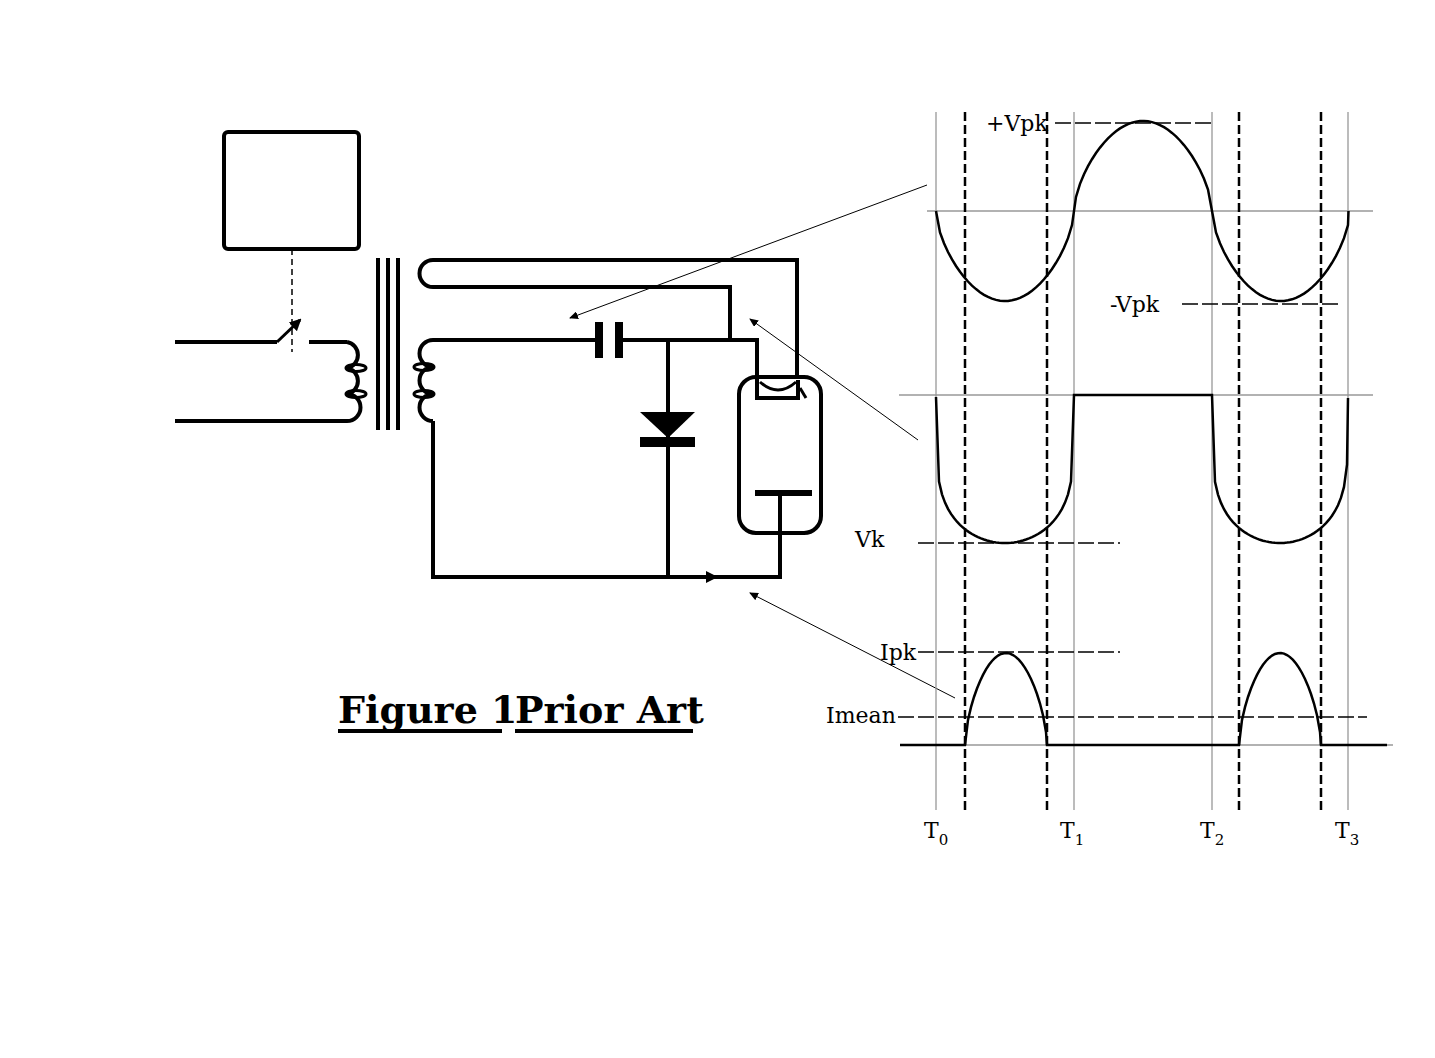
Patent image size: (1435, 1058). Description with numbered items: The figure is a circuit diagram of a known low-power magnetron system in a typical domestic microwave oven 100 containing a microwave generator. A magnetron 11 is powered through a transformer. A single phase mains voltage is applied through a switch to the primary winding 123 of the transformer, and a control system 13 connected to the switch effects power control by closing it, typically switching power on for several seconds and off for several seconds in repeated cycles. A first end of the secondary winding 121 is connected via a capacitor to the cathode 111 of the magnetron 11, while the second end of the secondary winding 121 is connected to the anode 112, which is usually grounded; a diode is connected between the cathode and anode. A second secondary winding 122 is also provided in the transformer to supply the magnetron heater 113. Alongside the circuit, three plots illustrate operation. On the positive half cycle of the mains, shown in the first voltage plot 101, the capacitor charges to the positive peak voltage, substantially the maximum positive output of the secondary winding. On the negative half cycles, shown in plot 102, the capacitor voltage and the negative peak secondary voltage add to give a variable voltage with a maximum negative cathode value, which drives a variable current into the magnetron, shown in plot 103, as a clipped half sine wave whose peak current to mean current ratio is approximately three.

The domestic microwave oven 100 is at (452, 130).
The control system 13 is at (224, 200).
The second secondary winding 122 is at (415, 258).
The secondary winding 121 is at (431, 399).
The primary winding 123 is at (349, 424).
The magnetron heater 113 is at (777, 386).
The cathode 111 is at (803, 390).
The magnetron 11 is at (821, 478).
The anode 112 is at (762, 486).
The first voltage plot 101 is at (1335, 268).
The voltage plot 102 is at (1335, 518).
The current plot 103 is at (1306, 679).